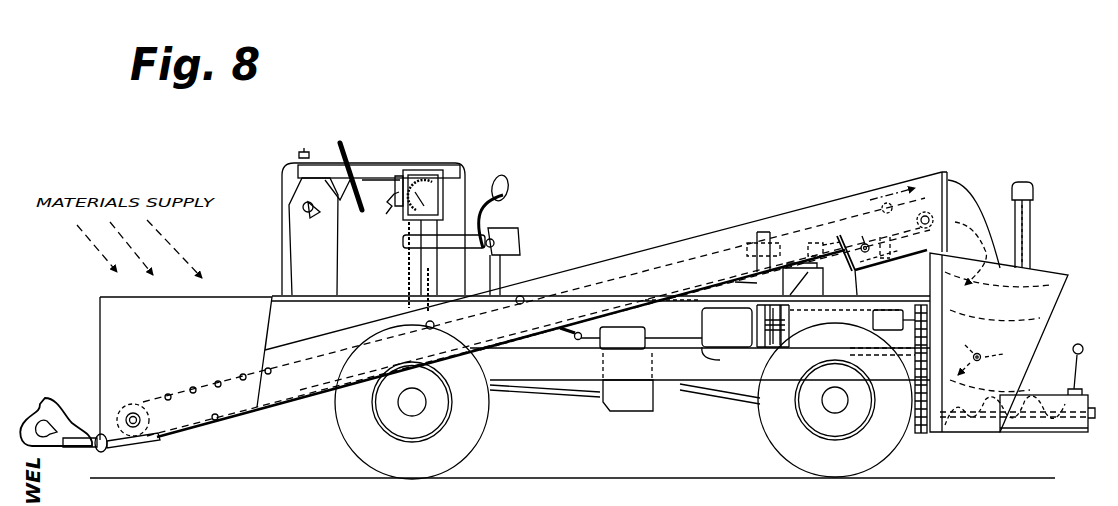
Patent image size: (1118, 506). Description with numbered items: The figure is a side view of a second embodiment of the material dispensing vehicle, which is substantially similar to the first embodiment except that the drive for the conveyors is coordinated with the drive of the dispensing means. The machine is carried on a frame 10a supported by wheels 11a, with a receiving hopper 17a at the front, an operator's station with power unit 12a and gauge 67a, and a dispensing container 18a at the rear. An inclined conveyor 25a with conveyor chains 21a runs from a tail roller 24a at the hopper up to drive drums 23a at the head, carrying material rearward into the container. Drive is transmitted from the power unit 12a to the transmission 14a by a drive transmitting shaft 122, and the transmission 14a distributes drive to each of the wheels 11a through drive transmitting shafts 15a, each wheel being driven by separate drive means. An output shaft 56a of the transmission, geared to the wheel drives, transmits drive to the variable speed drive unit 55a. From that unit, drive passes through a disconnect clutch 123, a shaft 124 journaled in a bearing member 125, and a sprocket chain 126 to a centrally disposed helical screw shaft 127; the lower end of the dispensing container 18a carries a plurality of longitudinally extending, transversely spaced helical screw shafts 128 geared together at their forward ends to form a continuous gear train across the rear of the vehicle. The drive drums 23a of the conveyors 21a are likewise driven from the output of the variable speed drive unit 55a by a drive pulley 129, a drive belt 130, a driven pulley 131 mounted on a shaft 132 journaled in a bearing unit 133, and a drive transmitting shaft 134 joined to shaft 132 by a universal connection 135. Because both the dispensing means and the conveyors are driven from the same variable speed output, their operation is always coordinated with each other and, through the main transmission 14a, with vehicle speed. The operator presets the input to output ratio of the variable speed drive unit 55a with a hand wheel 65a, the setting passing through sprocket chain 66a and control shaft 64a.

The frame 10a is at (582, 375).
The wheels 11a is at (353, 435).
The power unit 12a is at (380, 165).
The transmission 14a is at (632, 405).
The drive transmitting shafts 15a is at (537, 393).
The receiving hopper 17a is at (124, 350).
The dispensing container 18a is at (1040, 268).
The conveyors 21a is at (660, 260).
The drive drums 23a is at (930, 188).
The conveyor tail roller 24a is at (138, 406).
The conveyor 25a is at (571, 270).
The variable speed drive unit 55a is at (745, 334).
The output shaft 56a is at (723, 347).
The control shaft 64a is at (680, 312).
The hand wheel 65a is at (399, 213).
The sprocket chain 66a is at (408, 283).
The gauge 67a is at (438, 180).
The drive transmitting shaft 122 is at (568, 334).
The disconnect clutch 123 is at (806, 308).
The shaft 124 is at (862, 318).
The bearing member 125 is at (885, 311).
The sprocket chain 126 is at (927, 353).
The helical screw shaft 127 is at (918, 437).
The helical screw shafts 128 is at (1037, 420).
The drive pulley 129 is at (762, 347).
The drive belt 130 is at (757, 283).
The driven pulley 131 is at (740, 231).
The shaft 132 is at (747, 248).
The bearing unit 133 is at (790, 240).
The drive transmitting shaft 134 is at (858, 295).
The universal connection 135 is at (867, 222).